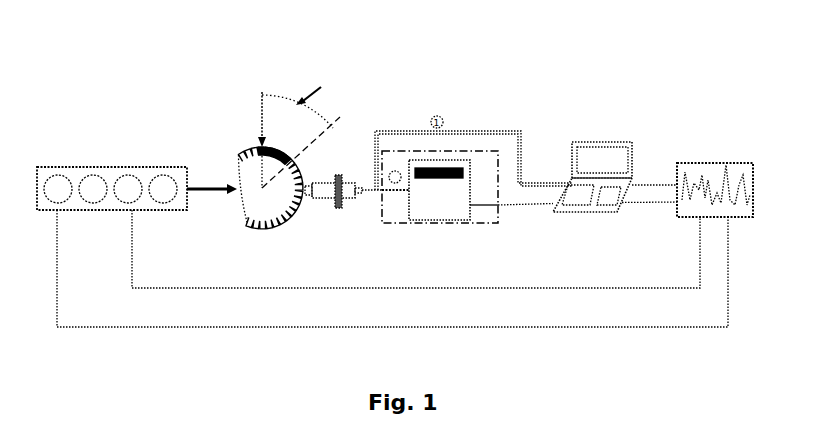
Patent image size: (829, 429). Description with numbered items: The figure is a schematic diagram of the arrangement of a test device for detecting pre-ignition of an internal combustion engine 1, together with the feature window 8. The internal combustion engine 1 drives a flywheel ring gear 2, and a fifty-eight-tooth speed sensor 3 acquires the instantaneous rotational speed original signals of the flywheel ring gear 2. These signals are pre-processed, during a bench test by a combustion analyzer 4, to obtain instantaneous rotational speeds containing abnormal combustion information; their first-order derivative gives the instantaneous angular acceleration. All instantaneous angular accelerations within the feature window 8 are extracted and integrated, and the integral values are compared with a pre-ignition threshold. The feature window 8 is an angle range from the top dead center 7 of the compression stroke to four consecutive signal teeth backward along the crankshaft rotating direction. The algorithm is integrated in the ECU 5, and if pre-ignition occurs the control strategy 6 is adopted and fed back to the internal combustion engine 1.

The internal combustion engine 1 is at (109, 173).
The flywheel ring gear 2 is at (258, 207).
The 58-tooth speed sensor 3 is at (325, 190).
The combustion analyzer 4 is at (440, 208).
The ECU 5 is at (592, 208).
The control strategy 6 is at (715, 170).
The top dead center of compression stroke 7 is at (255, 119).
The feature window 8 is at (297, 103).